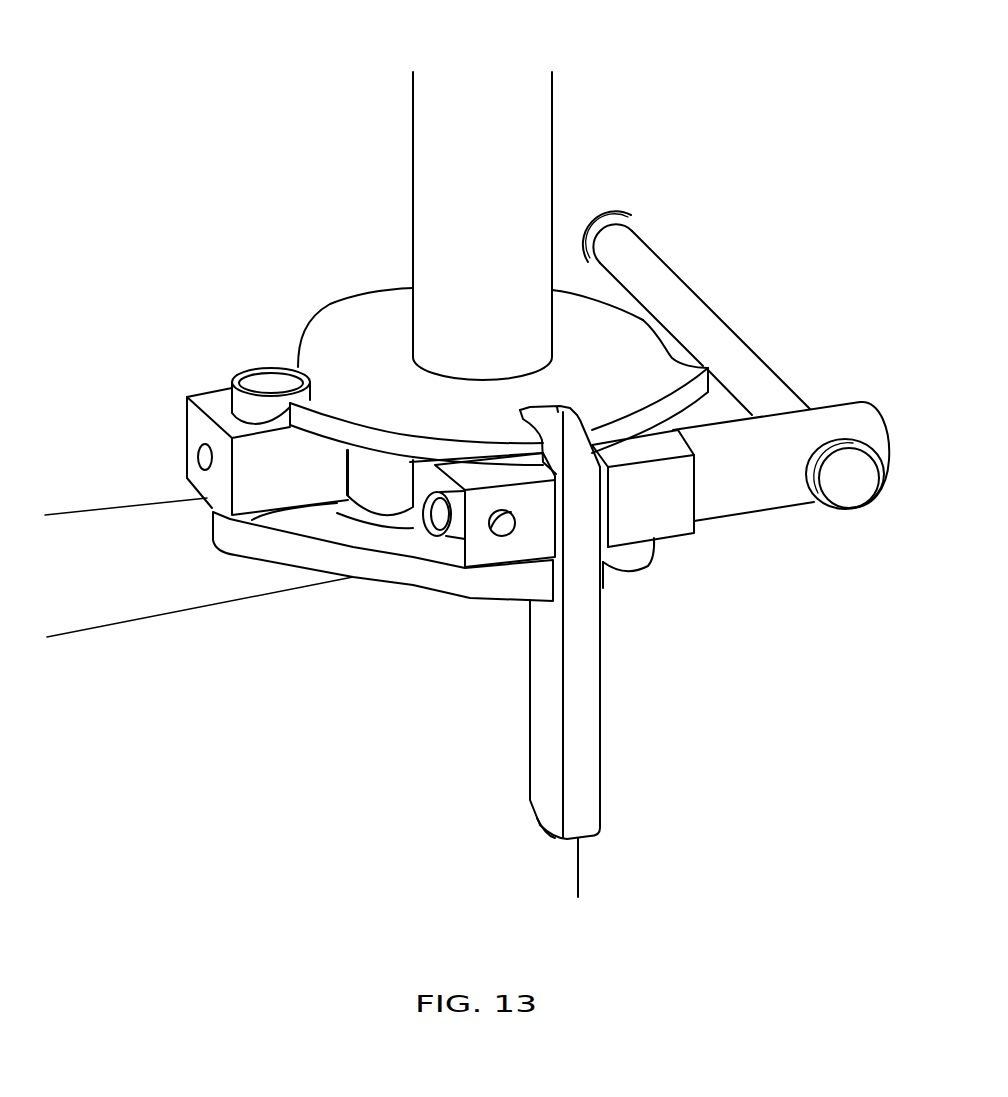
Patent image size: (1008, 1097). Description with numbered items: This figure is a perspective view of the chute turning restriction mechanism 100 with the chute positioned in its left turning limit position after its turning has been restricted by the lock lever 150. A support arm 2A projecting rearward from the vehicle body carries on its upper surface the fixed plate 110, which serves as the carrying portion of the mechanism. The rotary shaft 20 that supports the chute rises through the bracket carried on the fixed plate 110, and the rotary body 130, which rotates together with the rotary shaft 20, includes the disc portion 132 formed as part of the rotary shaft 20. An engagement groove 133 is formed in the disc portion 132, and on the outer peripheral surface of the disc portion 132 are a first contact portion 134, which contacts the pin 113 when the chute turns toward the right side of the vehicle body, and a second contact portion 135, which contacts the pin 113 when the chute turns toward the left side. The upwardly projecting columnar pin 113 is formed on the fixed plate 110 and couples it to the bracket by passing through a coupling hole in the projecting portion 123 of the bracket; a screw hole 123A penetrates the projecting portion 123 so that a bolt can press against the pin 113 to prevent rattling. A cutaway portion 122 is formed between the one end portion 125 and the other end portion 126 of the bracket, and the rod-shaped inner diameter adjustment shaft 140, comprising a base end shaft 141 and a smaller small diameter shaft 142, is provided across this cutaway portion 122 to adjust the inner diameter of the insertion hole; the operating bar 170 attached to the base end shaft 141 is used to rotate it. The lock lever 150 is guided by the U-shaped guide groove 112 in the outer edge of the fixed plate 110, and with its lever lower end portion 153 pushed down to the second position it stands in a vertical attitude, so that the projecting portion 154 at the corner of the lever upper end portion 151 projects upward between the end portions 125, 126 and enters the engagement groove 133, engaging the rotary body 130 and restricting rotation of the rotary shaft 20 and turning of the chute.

The rotary shaft 20 is at (478, 95).
The chute turning restriction mechanism 100 is at (376, 258).
The rotary body 130 is at (565, 290).
The disc portion 132 is at (610, 323).
The engagement groove 133 is at (533, 410).
The first contact portion 134 is at (688, 363).
The second contact portion 135 is at (290, 362).
The pin 113 is at (271, 355).
The projecting portion 123 is at (239, 422).
The screw hole 123A is at (200, 455).
The support arm 2A is at (87, 527).
The fixed plate 110 is at (220, 530).
The guide groove 112 is at (553, 578).
The cutaway portion 122 is at (666, 519).
The one end portion 125 is at (678, 522).
The other end portion 126 is at (467, 555).
The small diameter shaft 142 is at (432, 522).
The inner diameter adjustment shaft 140 is at (790, 419).
The base end shaft 141 is at (822, 398).
The lock lever 150 is at (623, 651).
The lever upper end portion 151 is at (730, 397).
The lever lower end portion 153 is at (542, 820).
The projecting portion 154 is at (566, 400).
The operating bar 170 is at (615, 232).